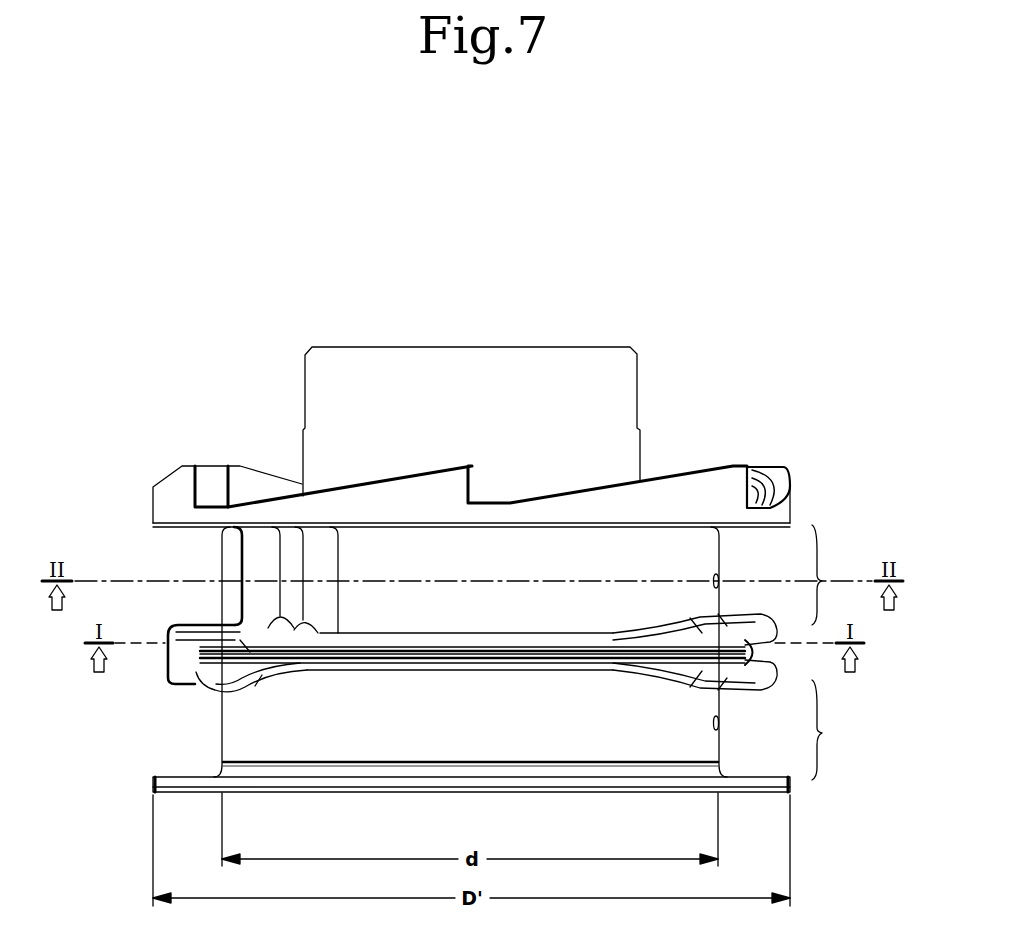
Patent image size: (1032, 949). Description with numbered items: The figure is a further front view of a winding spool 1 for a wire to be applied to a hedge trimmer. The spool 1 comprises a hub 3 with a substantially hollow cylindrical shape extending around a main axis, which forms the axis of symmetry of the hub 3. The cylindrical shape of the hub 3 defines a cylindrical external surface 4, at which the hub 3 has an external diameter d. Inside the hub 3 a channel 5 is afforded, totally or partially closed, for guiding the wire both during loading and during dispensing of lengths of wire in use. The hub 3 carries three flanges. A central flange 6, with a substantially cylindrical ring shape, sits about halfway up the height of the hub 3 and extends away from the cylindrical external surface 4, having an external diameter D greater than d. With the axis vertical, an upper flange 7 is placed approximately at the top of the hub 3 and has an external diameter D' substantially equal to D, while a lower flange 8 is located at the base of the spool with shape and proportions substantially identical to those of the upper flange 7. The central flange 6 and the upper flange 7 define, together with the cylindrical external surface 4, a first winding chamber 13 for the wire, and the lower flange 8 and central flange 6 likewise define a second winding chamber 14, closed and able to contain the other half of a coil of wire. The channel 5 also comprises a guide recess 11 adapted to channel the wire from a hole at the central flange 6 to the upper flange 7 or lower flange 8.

The winding spool 1 is at (215, 318).
The hub 3 is at (331, 372).
The cylindrical external surface 4 is at (494, 725).
The channel 5 is at (160, 612).
The central flange 6 is at (577, 645).
The upper flange 7 is at (168, 775).
The lower flange 8 is at (173, 495).
The guide recess 11 is at (262, 560).
The first winding chamber 13 is at (822, 733).
The second winding chamber 14 is at (822, 581).